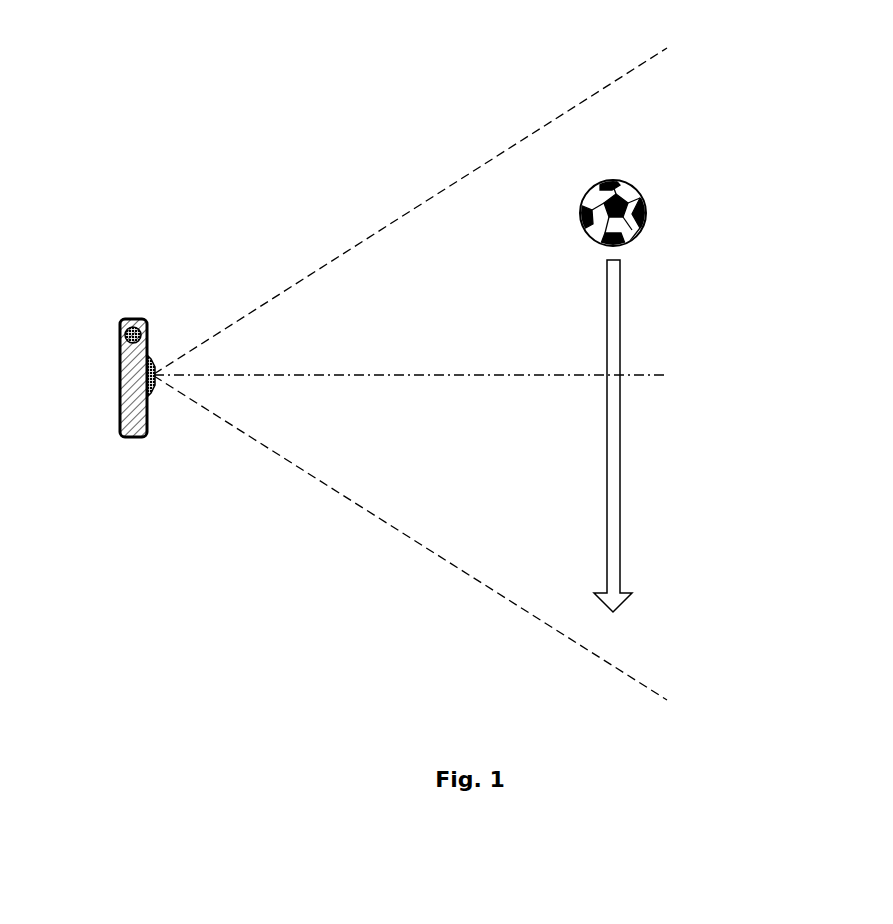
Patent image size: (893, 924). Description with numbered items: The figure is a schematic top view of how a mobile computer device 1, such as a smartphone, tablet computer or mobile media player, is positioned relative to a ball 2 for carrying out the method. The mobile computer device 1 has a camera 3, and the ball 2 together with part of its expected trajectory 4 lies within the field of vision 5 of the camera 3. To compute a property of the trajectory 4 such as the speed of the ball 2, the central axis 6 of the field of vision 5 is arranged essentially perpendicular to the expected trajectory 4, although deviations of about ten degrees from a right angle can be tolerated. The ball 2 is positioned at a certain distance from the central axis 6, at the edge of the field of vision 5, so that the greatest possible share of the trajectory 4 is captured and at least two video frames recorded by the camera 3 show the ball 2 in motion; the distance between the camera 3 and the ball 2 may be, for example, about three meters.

The mobile computer device 1 is at (120, 355).
The ball 2 is at (630, 202).
The camera 3 is at (152, 357).
The expected trajectory 4 is at (614, 418).
The field of vision 5 is at (325, 482).
The central axis 6 is at (380, 375).